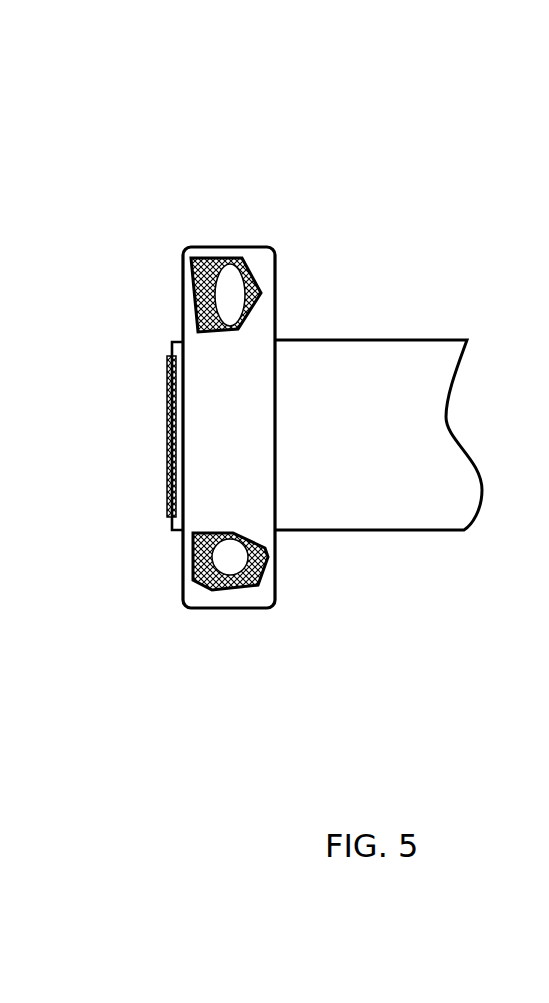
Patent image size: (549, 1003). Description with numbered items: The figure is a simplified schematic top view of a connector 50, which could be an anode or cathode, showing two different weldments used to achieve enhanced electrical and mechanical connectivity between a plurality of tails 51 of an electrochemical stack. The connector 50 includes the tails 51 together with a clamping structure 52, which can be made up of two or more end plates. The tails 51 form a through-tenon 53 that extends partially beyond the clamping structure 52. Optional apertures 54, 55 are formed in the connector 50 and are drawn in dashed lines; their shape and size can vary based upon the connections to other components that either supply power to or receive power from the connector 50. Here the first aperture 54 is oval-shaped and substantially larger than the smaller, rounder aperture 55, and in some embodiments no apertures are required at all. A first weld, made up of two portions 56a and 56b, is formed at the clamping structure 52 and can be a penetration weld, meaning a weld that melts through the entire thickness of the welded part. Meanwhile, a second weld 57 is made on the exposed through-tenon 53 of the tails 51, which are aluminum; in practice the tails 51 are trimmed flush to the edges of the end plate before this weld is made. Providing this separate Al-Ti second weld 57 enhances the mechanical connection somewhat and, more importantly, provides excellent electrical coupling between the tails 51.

The connector 50 is at (116, 80).
The tails 51 is at (343, 517).
The clamping structure 52 is at (275, 296).
The through-tenon 53 is at (170, 335).
The first aperture 54 is at (233, 258).
The second aperture 55 is at (212, 607).
The first weld portion 56a is at (187, 254).
The first weld portion 56b is at (193, 548).
The second weld 57 is at (164, 425).